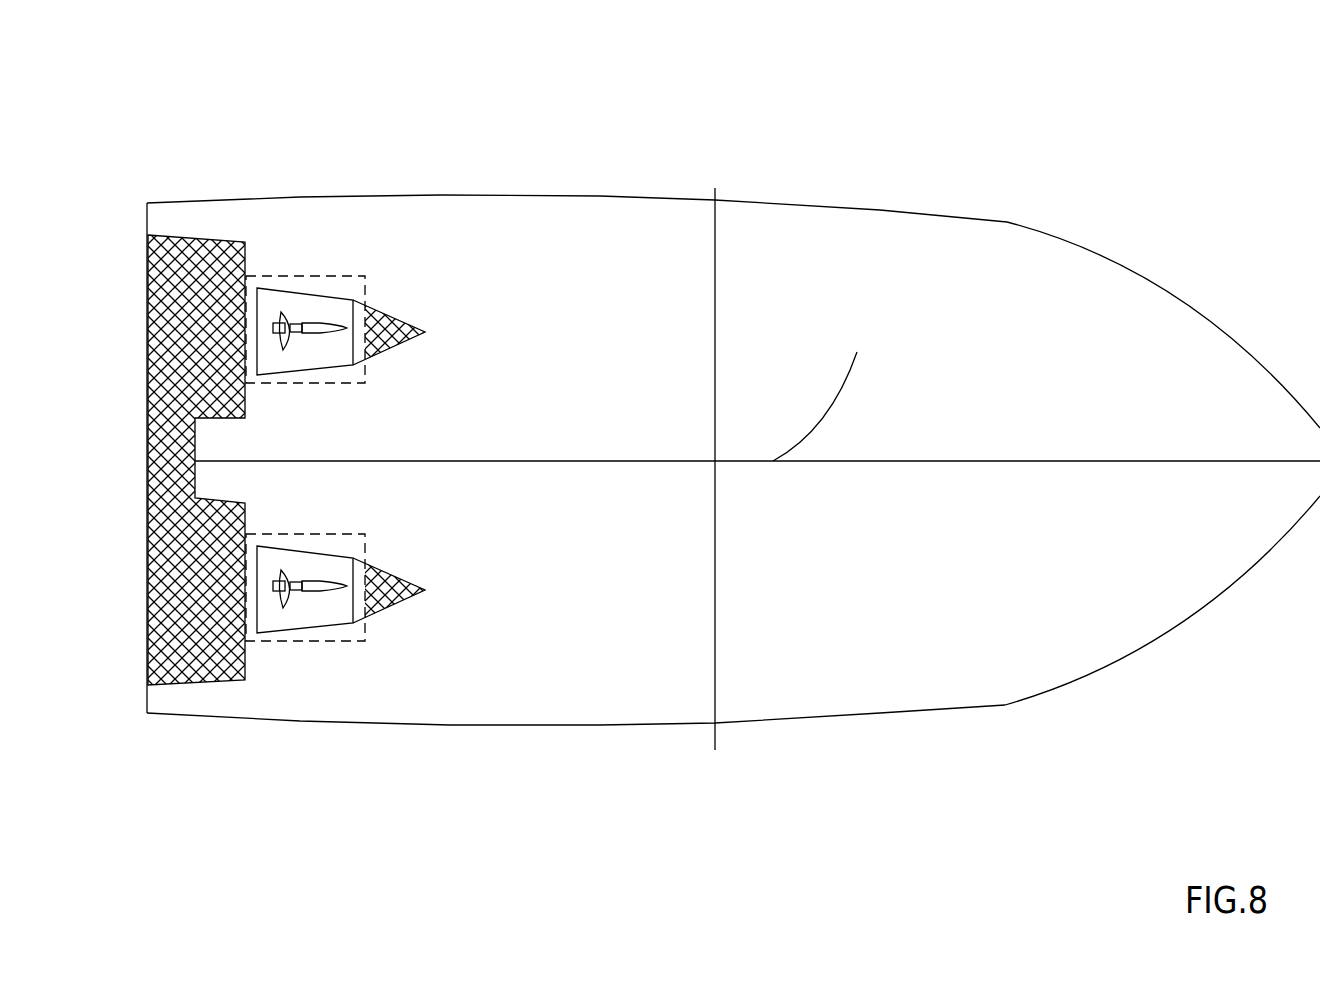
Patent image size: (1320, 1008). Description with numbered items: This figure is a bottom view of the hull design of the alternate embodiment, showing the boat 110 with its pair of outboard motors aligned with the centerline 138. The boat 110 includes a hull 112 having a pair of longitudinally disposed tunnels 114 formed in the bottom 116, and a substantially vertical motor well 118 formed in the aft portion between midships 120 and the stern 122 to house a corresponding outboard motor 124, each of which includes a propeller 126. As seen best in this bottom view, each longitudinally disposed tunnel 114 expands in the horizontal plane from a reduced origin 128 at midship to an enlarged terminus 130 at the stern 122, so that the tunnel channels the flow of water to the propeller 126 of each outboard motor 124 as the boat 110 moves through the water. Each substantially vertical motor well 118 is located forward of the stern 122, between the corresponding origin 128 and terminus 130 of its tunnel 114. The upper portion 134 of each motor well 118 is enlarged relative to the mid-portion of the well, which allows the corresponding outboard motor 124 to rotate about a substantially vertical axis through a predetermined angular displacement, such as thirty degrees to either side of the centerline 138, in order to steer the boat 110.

The boat 110 is at (895, 143).
The hull 112 is at (1137, 263).
The longitudinally disposed tunnel 114 is at (210, 272).
The bottom 116 is at (647, 305).
The substantially vertical motor well 118 is at (332, 290).
The midships 120 is at (714, 538).
The stern 122 is at (196, 430).
The outboard motor 124 is at (306, 312).
The propeller 126 is at (281, 310).
The reduced origin 128 is at (427, 332).
The enlarged terminus 130 is at (146, 252).
The upper portion 134 is at (371, 464).
The centerline 138 is at (842, 391).